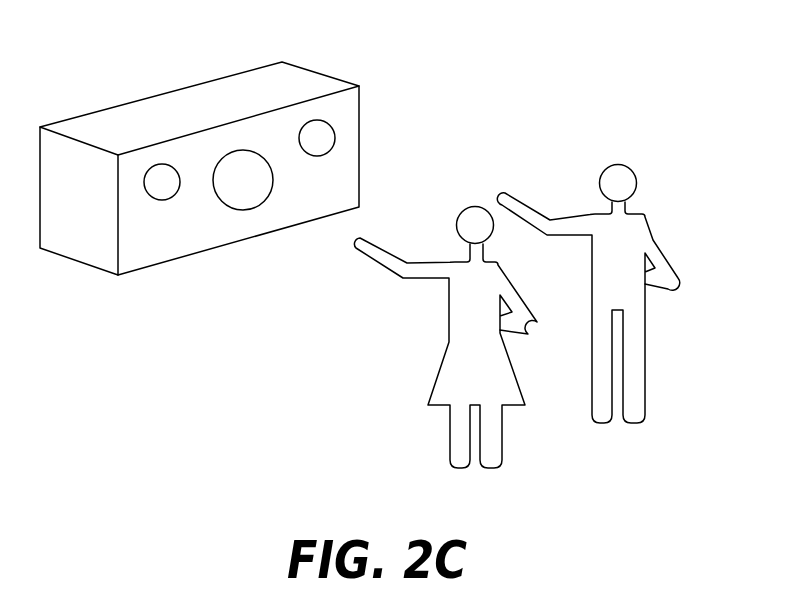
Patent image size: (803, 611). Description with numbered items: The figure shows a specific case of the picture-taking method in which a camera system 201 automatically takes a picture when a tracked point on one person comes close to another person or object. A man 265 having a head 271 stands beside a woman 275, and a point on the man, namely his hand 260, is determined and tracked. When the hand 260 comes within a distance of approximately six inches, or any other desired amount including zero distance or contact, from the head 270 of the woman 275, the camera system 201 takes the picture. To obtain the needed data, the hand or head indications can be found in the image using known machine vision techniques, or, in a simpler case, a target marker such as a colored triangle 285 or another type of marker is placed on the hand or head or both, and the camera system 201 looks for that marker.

The camera system 201 is at (330, 78).
The hand 260 is at (505, 192).
The man 265 is at (647, 382).
The head 270 is at (487, 208).
The head 271 is at (637, 176).
The woman 275 is at (448, 320).
The colored triangle 285 is at (467, 206).